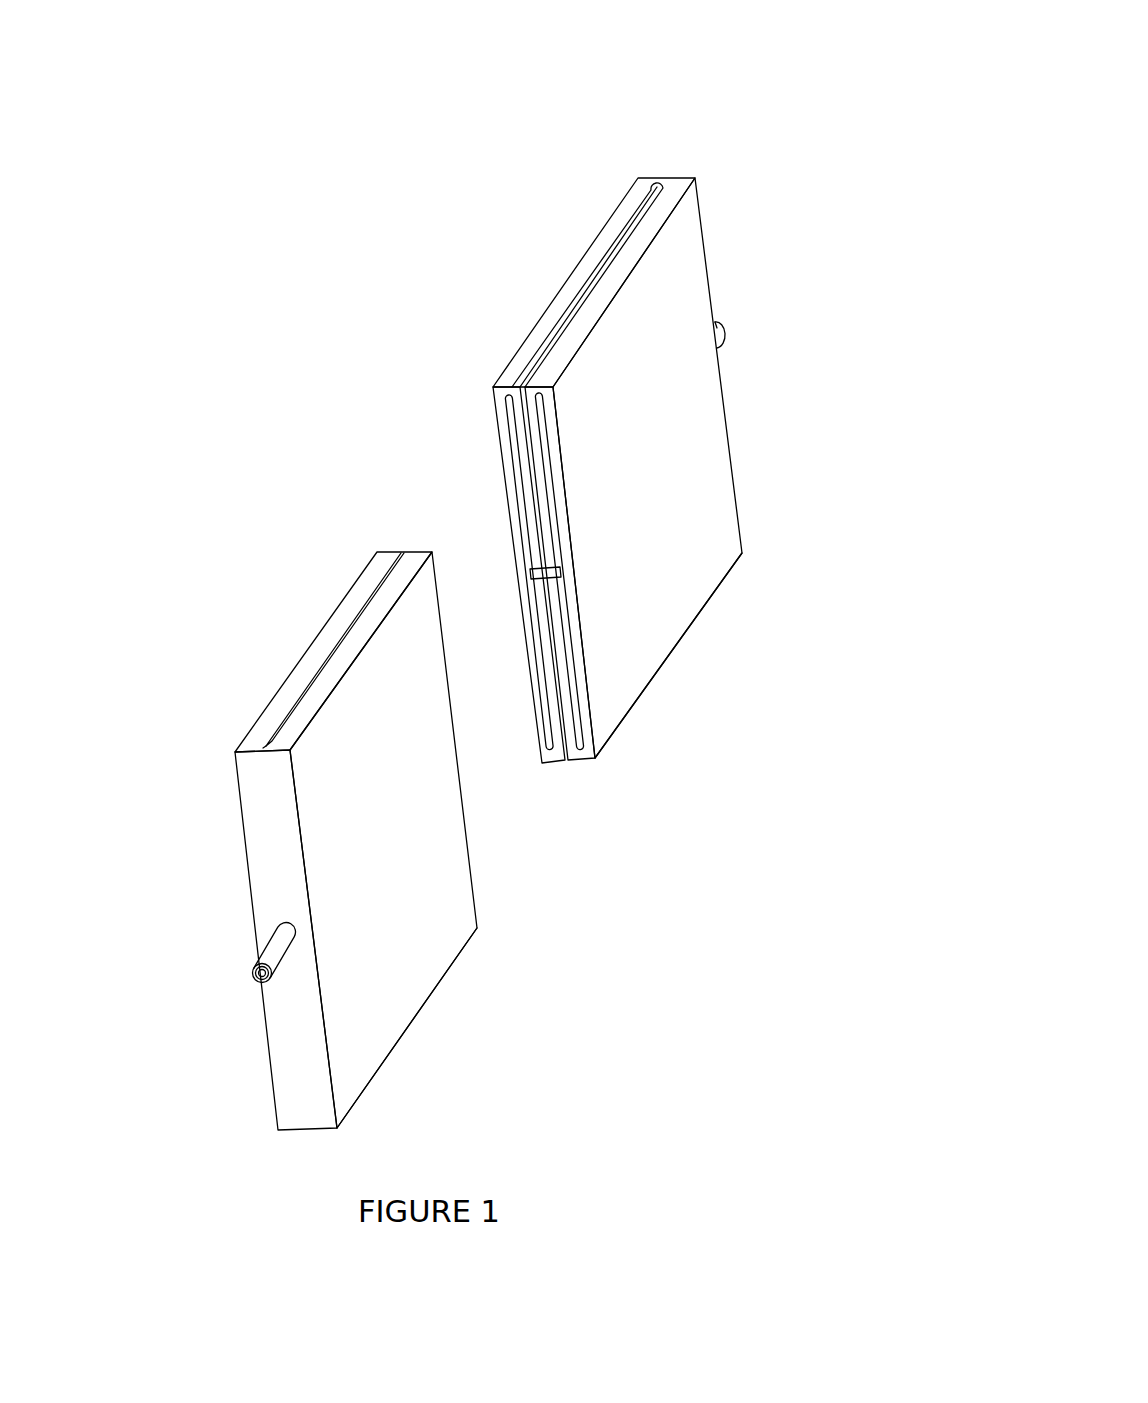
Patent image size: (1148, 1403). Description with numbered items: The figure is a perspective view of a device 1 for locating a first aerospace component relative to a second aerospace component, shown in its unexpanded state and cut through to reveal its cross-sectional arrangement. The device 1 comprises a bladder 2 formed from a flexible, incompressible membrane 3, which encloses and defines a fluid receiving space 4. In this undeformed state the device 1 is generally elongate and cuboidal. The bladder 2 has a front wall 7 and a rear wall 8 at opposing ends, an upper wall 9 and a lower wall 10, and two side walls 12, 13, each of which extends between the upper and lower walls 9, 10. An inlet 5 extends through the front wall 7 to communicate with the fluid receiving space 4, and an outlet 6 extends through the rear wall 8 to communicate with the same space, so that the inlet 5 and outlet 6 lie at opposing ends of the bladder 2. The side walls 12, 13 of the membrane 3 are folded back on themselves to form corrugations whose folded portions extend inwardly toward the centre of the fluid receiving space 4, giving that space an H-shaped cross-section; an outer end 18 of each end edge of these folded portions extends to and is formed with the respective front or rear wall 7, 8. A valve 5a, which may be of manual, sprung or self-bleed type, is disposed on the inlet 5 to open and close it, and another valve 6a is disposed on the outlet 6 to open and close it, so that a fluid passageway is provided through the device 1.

The device 1 is at (752, 118).
The bladder 2 is at (388, 1027).
The membrane 3 is at (430, 958).
The fluid receiving space 4 is at (578, 742).
The inlet 5 is at (275, 952).
The inlet valve 5a is at (262, 975).
The outlet 6 is at (723, 335).
The outlet valve 6a is at (718, 320).
The front wall 7 is at (272, 838).
The rear wall 8 is at (703, 247).
The upper wall 9 is at (300, 657).
The lower wall 10 is at (655, 635).
The side wall 12 is at (340, 617).
The side wall 13 is at (642, 695).
The outer end 18 is at (263, 745).